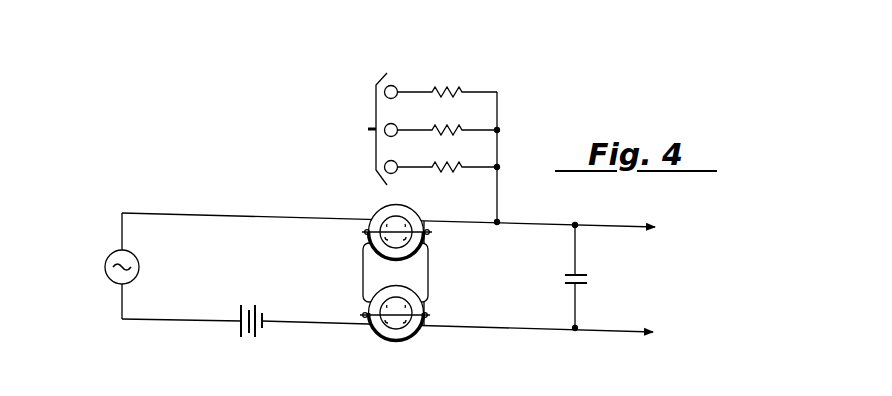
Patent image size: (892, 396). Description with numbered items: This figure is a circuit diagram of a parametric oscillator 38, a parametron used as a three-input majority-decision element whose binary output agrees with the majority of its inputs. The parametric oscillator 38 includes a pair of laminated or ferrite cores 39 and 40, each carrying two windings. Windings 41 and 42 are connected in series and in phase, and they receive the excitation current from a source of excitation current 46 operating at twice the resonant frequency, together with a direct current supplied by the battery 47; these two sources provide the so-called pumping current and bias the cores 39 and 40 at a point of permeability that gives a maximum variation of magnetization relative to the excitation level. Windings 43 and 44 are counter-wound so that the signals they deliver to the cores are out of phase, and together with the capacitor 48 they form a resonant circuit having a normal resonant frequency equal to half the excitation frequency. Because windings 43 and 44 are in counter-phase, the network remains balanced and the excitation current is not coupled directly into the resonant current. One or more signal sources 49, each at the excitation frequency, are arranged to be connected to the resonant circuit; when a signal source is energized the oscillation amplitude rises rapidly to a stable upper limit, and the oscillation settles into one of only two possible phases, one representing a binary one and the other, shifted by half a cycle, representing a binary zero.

The parametric oscillator 38 is at (207, 186).
The core 39 is at (380, 210).
The core 40 is at (390, 341).
The winding 41 is at (364, 232).
The winding 42 is at (362, 313).
The winding 43 is at (430, 218).
The winding 44 is at (427, 326).
The source of excitation current 46 is at (108, 253).
The battery 47 is at (237, 338).
The capacitor 48 is at (580, 283).
The signal sources 49 is at (376, 85).